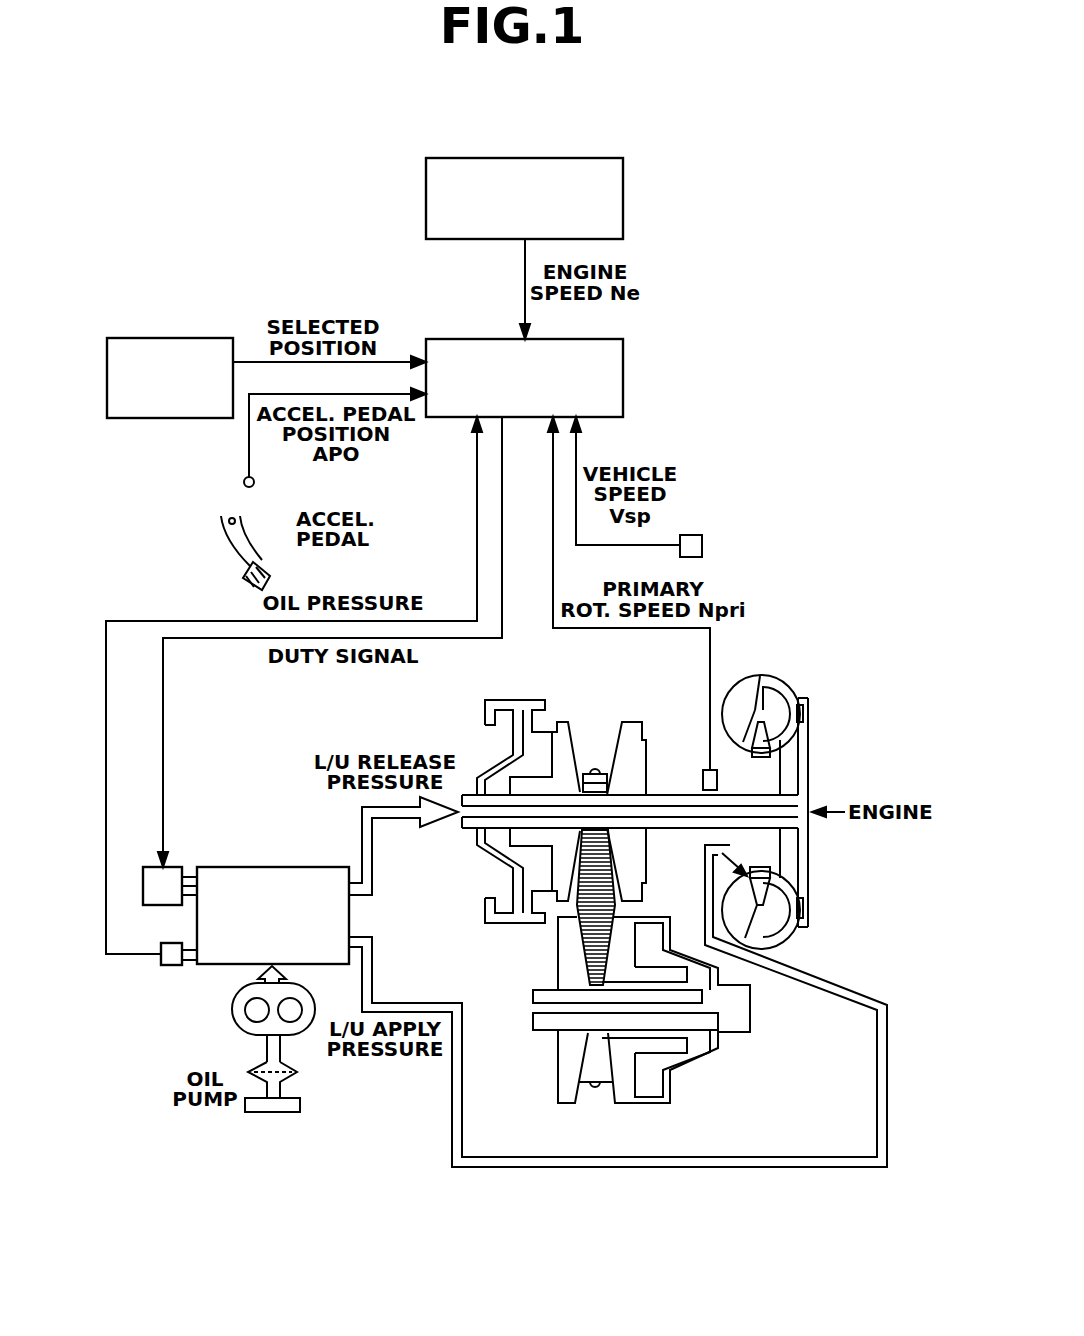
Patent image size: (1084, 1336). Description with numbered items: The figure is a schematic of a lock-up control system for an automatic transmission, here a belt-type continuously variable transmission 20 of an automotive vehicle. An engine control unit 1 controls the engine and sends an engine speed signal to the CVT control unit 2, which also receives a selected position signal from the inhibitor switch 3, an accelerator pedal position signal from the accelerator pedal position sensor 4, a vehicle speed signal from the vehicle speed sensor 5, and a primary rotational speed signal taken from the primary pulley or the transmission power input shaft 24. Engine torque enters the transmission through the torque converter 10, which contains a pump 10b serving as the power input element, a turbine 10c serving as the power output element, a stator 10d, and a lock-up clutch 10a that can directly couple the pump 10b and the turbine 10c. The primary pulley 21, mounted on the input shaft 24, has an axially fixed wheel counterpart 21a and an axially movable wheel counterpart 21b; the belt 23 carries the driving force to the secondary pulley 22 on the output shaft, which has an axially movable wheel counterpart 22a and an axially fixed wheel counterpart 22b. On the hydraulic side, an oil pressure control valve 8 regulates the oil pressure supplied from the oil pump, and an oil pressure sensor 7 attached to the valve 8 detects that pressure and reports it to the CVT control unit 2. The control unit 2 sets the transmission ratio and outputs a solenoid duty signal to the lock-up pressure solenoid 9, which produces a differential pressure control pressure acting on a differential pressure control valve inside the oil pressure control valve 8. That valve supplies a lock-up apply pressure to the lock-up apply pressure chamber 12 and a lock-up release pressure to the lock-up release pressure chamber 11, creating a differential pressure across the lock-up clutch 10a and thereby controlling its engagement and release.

The engine control unit 1 is at (625, 195).
The CVT control unit 2 is at (625, 387).
The inhibitor switch 3 is at (210, 338).
The accelerator pedal position sensor 4 is at (244, 484).
The vehicle speed sensor 5 is at (702, 546).
The oil pressure sensor 7 is at (170, 966).
The oil pressure control valve 8 is at (305, 867).
The lock-up pressure solenoid 9 is at (150, 867).
The torque converter 10 is at (800, 806).
The lock-up clutch 10a is at (803, 705).
The pump 10b is at (747, 932).
The turbine 10c is at (790, 921).
The stator 10d is at (759, 746).
The lock-up release pressure chamber 11 is at (808, 766).
The lock-up apply pressure chamber 12 is at (790, 857).
The belt-type continuously variable transmission 20 is at (611, 899).
The primary pulley 21 is at (589, 797).
The axially fixed wheel counterpart 21a is at (632, 767).
The axially movable wheel counterpart 21b is at (572, 747).
The secondary pulley 22 is at (622, 1022).
The axially movable wheel counterpart 22a is at (627, 1080).
The axially fixed wheel counterpart 22b is at (560, 1064).
The belt 23 is at (585, 940).
The transmission power input shaft 24 is at (677, 828).